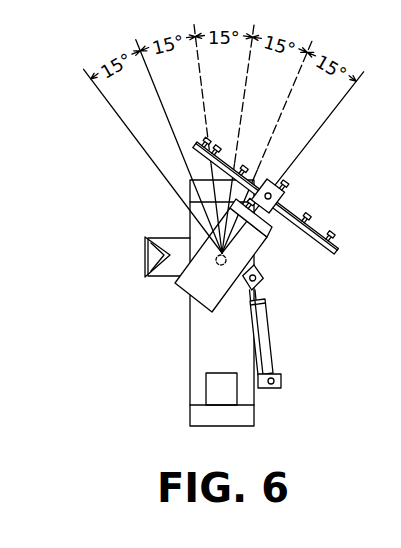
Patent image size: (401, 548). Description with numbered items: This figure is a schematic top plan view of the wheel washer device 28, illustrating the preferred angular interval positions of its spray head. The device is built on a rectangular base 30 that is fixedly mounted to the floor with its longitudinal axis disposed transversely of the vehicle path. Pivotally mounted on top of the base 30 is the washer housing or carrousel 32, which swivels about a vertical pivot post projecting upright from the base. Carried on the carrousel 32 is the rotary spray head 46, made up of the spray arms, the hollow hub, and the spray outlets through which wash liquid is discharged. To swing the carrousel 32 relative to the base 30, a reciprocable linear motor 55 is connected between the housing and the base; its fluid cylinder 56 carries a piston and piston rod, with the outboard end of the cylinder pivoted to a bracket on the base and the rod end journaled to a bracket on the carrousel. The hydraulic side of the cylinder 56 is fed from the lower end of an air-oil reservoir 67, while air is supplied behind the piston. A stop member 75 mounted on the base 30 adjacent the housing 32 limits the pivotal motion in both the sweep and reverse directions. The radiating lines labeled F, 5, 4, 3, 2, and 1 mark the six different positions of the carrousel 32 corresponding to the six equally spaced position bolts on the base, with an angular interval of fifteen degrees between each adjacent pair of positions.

The rectangular base 30 is at (233, 351).
The air-oil reservoir 67 is at (228, 390).
The stop member 75 is at (144, 258).
The washer housing or carrousel 32 is at (198, 282).
The wheel washer device 28 is at (280, 287).
The reciprocable linear motor 55 is at (285, 330).
The fluid cylinder 56 is at (273, 363).
The rotary spray head 46 is at (310, 187).
The position F is at (145, 149).
The position 5 is at (173, 133).
The position 4 is at (204, 126).
The position 3 is at (242, 126).
The position 2 is at (273, 134).
The position 1 is at (301, 150).